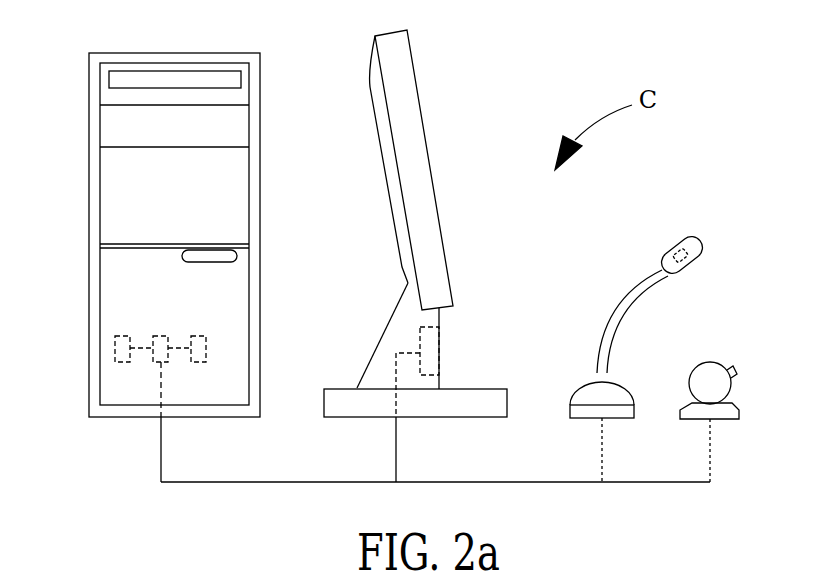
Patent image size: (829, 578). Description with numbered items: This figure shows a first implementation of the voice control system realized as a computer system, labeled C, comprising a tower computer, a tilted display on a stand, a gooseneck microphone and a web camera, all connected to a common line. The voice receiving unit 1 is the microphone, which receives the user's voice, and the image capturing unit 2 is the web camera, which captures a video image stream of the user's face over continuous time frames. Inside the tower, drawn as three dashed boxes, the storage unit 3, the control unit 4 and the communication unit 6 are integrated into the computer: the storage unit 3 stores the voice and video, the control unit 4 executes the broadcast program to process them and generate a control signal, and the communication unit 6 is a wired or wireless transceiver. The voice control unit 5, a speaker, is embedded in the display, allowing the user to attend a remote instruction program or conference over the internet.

The voice receiving unit 1 is at (690, 260).
The image capturing unit 2 is at (710, 366).
The storage unit 3 is at (203, 336).
The control unit 4 is at (156, 334).
The voice control unit 5 is at (442, 318).
The communication unit 6 is at (127, 336).